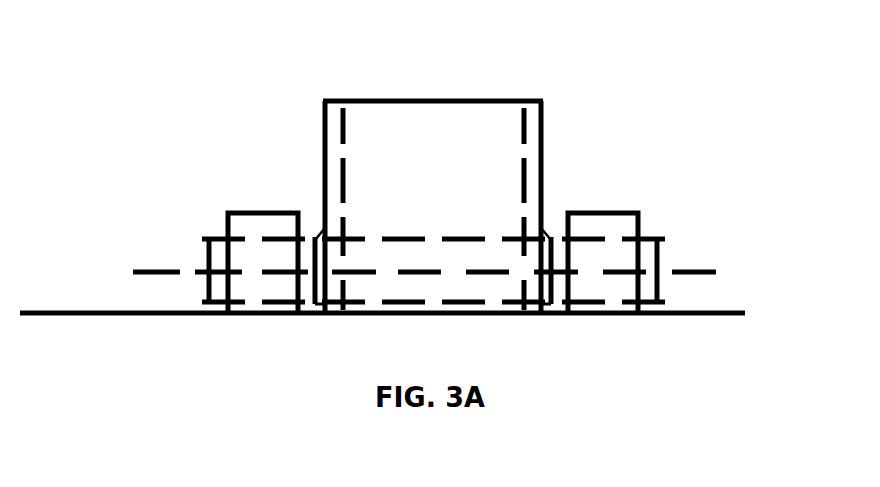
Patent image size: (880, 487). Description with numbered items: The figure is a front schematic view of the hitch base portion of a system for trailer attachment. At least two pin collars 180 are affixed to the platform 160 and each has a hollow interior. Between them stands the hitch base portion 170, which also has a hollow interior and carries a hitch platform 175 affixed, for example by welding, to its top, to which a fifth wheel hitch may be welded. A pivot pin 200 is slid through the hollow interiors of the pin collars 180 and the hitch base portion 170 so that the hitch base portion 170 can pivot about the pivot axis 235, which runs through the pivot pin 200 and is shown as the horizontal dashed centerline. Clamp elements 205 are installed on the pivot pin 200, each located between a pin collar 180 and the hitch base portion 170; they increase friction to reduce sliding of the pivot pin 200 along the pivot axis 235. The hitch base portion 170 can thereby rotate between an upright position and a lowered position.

The platform 160 is at (157, 315).
The hitch base portion 170 is at (544, 172).
The hitch platform 175 is at (348, 100).
The pin collar 180 is at (242, 221).
The pivot pin 200 is at (212, 257).
The clamp element 205 is at (305, 314).
The pivot axis 235 is at (160, 271).